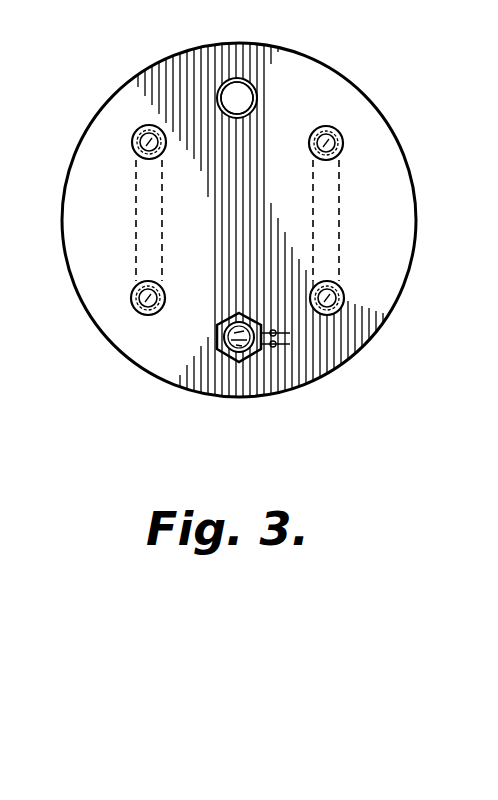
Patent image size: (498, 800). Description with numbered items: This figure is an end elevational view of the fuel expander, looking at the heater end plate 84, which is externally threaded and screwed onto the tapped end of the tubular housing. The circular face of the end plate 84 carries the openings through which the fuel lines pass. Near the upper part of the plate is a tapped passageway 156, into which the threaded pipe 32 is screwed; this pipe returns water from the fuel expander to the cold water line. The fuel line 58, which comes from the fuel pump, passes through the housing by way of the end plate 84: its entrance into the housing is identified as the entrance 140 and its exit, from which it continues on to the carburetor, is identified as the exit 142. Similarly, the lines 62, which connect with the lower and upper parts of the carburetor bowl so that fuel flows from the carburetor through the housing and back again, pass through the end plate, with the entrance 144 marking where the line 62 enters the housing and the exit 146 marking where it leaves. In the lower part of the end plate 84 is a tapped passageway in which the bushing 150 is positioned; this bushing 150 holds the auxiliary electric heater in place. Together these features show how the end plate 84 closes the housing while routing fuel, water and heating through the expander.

The threaded pipe 32 is at (233, 100).
The tapped passageway 156 is at (259, 94).
The exit of line 62 146 is at (349, 97).
The entrance of fuel line 58 140 is at (148, 143).
The fuel line 58 is at (152, 182).
The line 62 is at (327, 214).
The entrance of line 62 144 is at (344, 296).
The exit of fuel line 58 142 is at (150, 302).
The heater end plate 84 is at (70, 284).
The bushing 150 is at (238, 366).